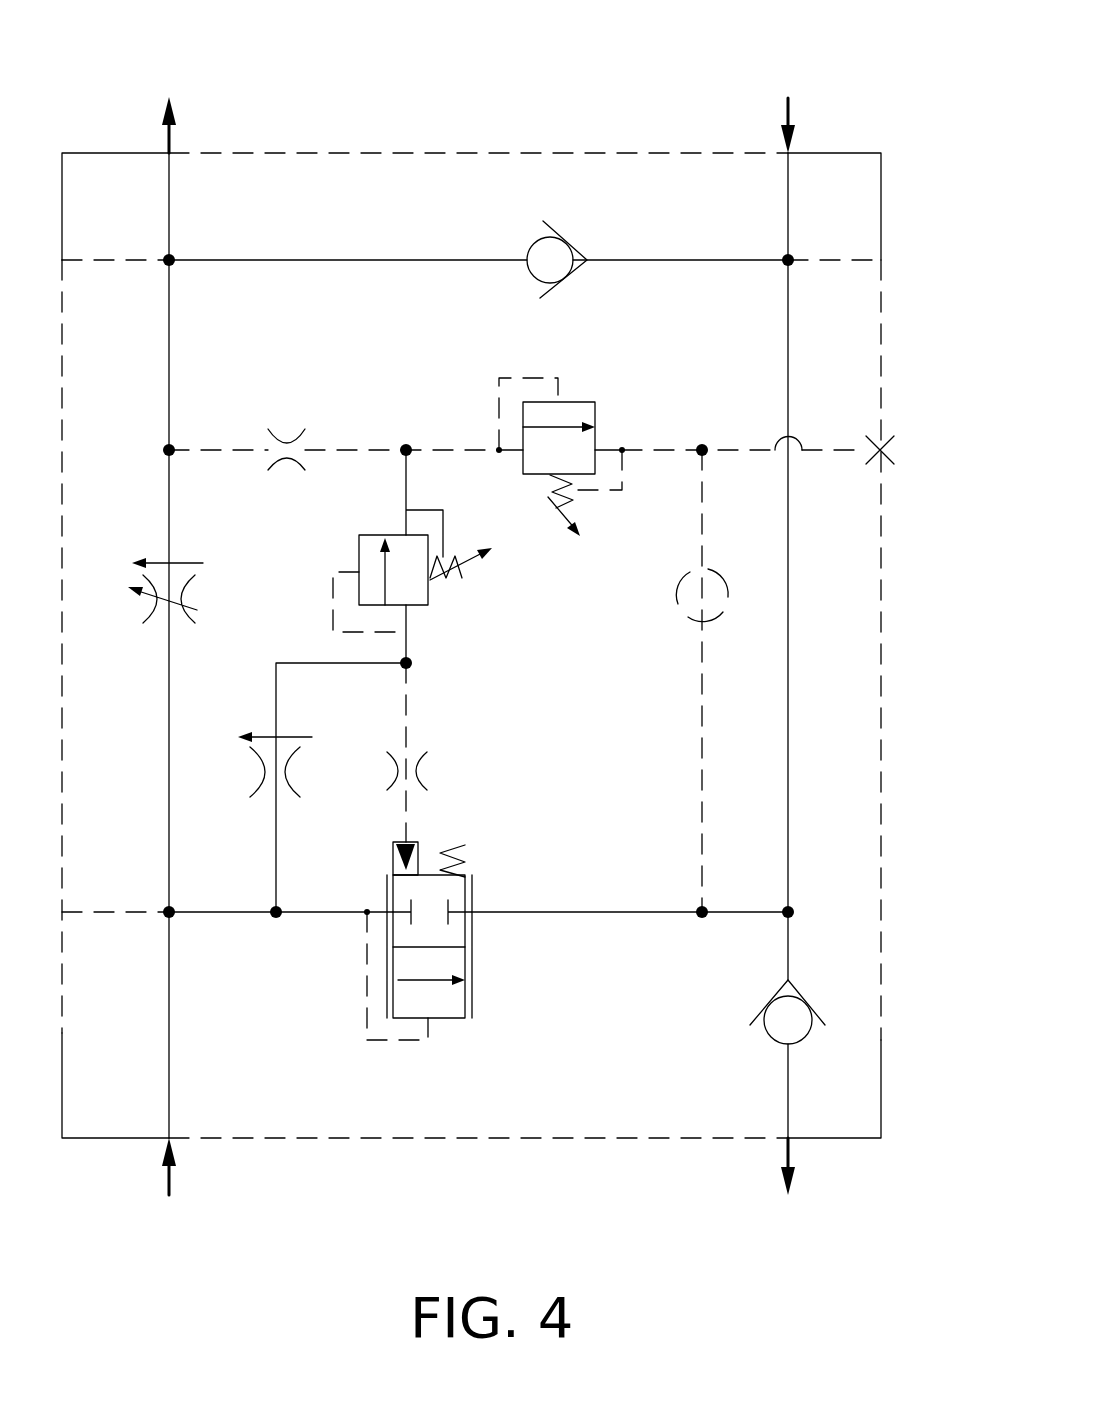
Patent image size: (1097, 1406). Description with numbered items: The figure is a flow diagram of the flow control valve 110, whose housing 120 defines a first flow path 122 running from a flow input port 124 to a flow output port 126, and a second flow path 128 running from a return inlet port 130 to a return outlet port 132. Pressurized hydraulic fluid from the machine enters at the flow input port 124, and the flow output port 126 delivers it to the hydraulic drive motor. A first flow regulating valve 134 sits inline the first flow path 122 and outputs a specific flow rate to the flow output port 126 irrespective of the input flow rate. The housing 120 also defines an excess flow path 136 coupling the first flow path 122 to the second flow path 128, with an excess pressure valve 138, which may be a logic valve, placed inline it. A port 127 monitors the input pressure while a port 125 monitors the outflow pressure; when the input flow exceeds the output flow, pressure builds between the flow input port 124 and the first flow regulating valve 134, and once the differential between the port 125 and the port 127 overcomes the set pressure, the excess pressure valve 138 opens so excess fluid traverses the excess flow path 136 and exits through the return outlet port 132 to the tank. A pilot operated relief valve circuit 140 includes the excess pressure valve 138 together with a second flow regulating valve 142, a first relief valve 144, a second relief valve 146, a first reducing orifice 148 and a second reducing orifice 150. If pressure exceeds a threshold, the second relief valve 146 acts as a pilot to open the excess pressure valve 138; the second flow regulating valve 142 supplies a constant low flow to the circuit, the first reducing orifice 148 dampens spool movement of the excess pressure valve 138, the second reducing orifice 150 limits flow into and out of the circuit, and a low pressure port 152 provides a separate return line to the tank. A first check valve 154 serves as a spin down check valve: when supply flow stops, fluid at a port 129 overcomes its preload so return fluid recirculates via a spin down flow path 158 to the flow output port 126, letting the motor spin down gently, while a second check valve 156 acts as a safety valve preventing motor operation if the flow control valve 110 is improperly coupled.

The flow control valve 110 is at (584, 60).
The housing 120 is at (586, 1148).
The first flow path 122 is at (170, 343).
The flow input port 124 is at (165, 1142).
The port 125 is at (99, 228).
The flow output port 126 is at (172, 152).
The port 127 is at (96, 875).
The second flow path 128 is at (790, 688).
The port 129 is at (841, 272).
The return inlet port 130 is at (791, 152).
The return outlet port 132 is at (792, 1140).
The first flow regulating valve 134 is at (157, 628).
The excess flow path 136 is at (553, 912).
The excess pressure valve 138 is at (455, 1020).
The pilot operated relief valve circuit 140 is at (452, 440).
The second flow regulating valve 142 is at (300, 772).
The first relief valve 144 is at (348, 542).
The second relief valve 146 is at (598, 395).
The first reducing orifice 148 is at (465, 742).
The second reducing orifice 150 is at (307, 428).
The low pressure port 152 is at (888, 445).
The first check valve 154 is at (563, 250).
The second check valve 156 is at (765, 1010).
The spin down flow path 158 is at (370, 260).